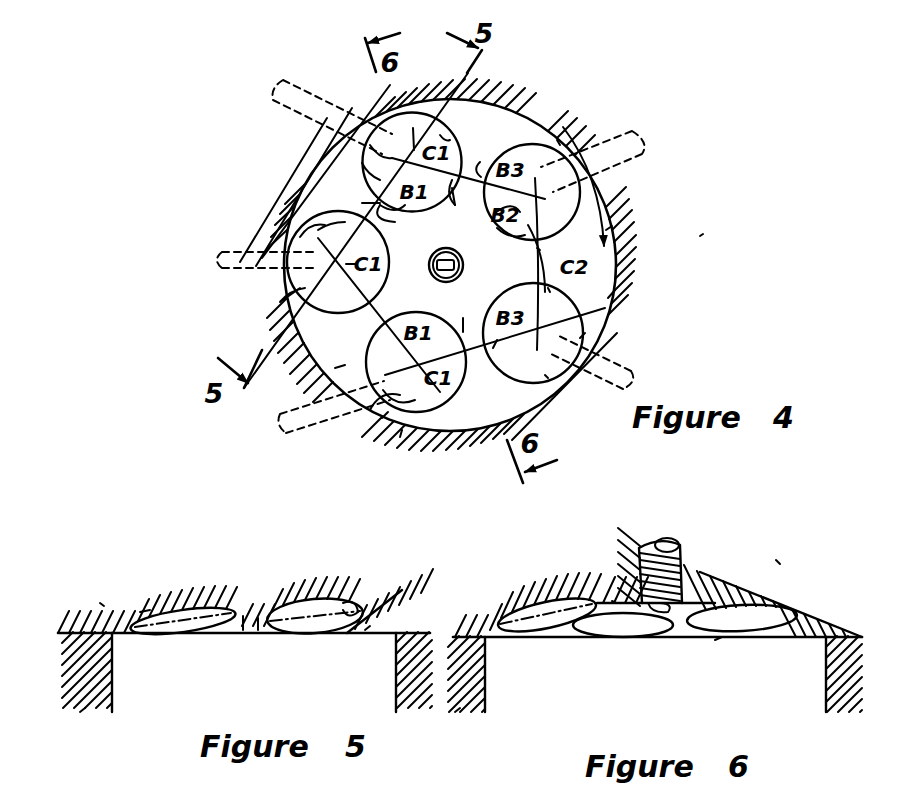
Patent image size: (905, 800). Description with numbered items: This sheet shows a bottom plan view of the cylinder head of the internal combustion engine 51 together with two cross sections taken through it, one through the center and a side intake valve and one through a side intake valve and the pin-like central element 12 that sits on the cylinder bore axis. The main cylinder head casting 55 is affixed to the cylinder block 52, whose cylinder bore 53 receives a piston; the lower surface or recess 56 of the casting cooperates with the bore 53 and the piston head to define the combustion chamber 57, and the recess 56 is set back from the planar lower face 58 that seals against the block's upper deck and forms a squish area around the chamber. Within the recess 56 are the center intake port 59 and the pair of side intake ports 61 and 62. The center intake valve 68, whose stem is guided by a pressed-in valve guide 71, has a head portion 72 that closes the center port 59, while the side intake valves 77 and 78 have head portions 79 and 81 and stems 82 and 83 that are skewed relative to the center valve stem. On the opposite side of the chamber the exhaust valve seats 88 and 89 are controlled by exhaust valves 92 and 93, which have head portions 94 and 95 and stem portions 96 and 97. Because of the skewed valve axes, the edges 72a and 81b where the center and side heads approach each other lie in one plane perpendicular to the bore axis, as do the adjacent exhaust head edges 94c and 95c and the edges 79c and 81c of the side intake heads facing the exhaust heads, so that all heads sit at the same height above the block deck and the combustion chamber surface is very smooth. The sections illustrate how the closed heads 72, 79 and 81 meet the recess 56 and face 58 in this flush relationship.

In FIG. 4, the pin 12 is at (447, 248).
In FIG. 6, the pin 12 is at (660, 543).
In FIG. 4, the internal combustion engine 51 is at (703, 234).
In FIG. 5, the internal combustion engine 51 is at (100, 603).
In FIG. 6, the internal combustion engine 51 is at (776, 560).
In FIG. 5, the cylinder block 52 is at (80, 712).
In FIG. 6, the cylinder block 52 is at (455, 712).
In FIG. 5, the cylinder bore 53 is at (114, 690).
In FIG. 6, the cylinder bore 53 is at (487, 680).
In FIG. 5, the main cylinder head casting 55 is at (425, 612).
In FIG. 6, the main cylinder head casting 55 is at (795, 603).
In FIG. 4, the cylinder head recess 56 is at (606, 230).
In FIG. 5, the cylinder head recess 56 is at (365, 630).
In FIG. 6, the cylinder head recess 56 is at (612, 600).
In FIG. 5, the combustion chamber 57 is at (255, 636).
In FIG. 6, the combustion chamber 57 is at (676, 637).
In FIG. 5, the planar lower face 58 is at (248, 634).
In FIG. 6, the planar lower face 58 is at (715, 640).
In FIG. 4, the center intake port 59 is at (318, 232).
In FIG. 5, the center intake port 59 is at (142, 612).
In FIG. 4, the side intake port 61 is at (442, 135).
In FIG. 5, the side intake port 61 is at (385, 616).
In FIG. 4, the side intake port 62 is at (400, 437).
In FIG. 4, the center intake valve 68 is at (283, 300).
In FIG. 4, the valve guide 71 is at (226, 270).
In FIG. 4, the head portion 72 is at (280, 302).
In FIG. 5, the head portion 72 is at (180, 616).
In FIG. 6, the head portion 72 is at (598, 630).
In FIG. 4, the valve head edge 72a is at (365, 203).
In FIG. 5, the valve head edge 72a is at (244, 616).
In FIG. 4, the side intake valve 77 is at (362, 163).
In FIG. 4, the side intake valve 78 is at (382, 418).
In FIG. 4, the head portion 79 is at (413, 128).
In FIG. 5, the head portion 79 is at (275, 603).
In FIG. 6, the head portion 79 is at (550, 610).
In FIG. 4, the cam center 79c is at (452, 206).
In FIG. 4, the head portion 81 is at (335, 368).
In FIG. 6, the head portion 81 is at (743, 617).
In FIG. 4, the valve head edge 81b is at (380, 205).
In FIG. 5, the valve head edge 81b is at (258, 618).
In FIG. 4, the cam center 81c is at (462, 313).
In FIG. 4, the stem portion 82 is at (300, 90).
In FIG. 4, the stem portion 83 is at (290, 432).
In FIG. 4, the exhaust valve seat 88 is at (557, 140).
In FIG. 4, the exhaust valve seat 89 is at (548, 378).
In FIG. 4, the exhaust valve 92 is at (563, 127).
In FIG. 4, the exhaust valve 93 is at (585, 331).
In FIG. 4, the head portion 94 is at (480, 159).
In FIG. 4, the valve head edge 94c is at (537, 248).
In FIG. 4, the head portion 95 is at (493, 348).
In FIG. 4, the cam center 95c is at (548, 288).
In FIG. 4, the stem portion 96 is at (645, 156).
In FIG. 4, the stem portion 97 is at (625, 372).